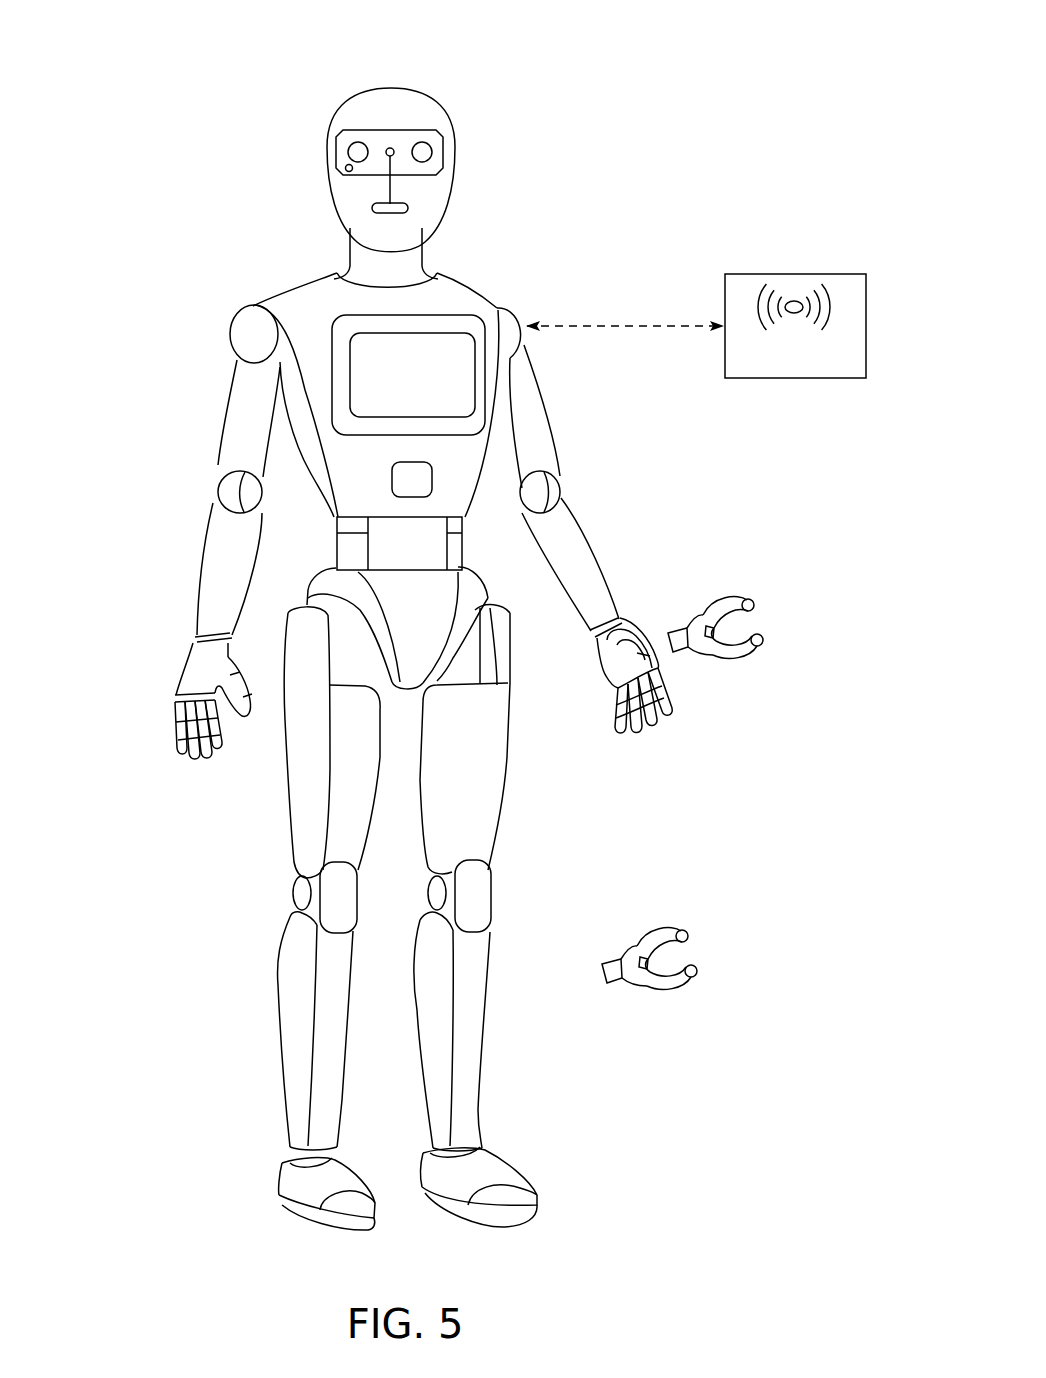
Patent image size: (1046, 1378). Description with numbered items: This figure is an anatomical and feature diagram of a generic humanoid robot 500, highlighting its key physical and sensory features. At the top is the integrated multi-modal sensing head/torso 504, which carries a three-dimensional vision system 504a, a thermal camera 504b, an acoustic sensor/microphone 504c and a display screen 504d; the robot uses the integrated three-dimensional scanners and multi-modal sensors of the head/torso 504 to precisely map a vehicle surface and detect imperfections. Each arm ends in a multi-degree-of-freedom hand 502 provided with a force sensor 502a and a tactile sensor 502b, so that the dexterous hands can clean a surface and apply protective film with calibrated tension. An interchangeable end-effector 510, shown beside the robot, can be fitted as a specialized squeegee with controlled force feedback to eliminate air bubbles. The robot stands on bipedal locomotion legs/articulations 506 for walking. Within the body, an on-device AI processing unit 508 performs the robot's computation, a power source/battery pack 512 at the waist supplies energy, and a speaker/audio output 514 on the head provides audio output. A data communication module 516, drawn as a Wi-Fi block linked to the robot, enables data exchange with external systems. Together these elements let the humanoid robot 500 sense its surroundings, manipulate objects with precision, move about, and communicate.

The humanoid robot 500 is at (148, 55).
The multi-degree-of-freedom hand 502 is at (142, 437).
The force sensor 502a is at (192, 680).
The tactile sensor 502b is at (666, 717).
The integrated multi-modal sensing head/torso 504 is at (460, 105).
The 3D vision system 504a is at (346, 148).
The thermal camera 504b is at (388, 148).
The acoustic sensor/microphone 504c is at (347, 171).
The display screen 504d is at (453, 343).
The bipedal locomotion legs/articulations 506 is at (215, 953).
The on-device AI processing unit 508 is at (422, 480).
The interchangeable end-effector 510 is at (758, 663).
The power source/battery pack 512 is at (430, 548).
The speaker/audio output 514 is at (408, 208).
The data communication module 516 is at (795, 273).